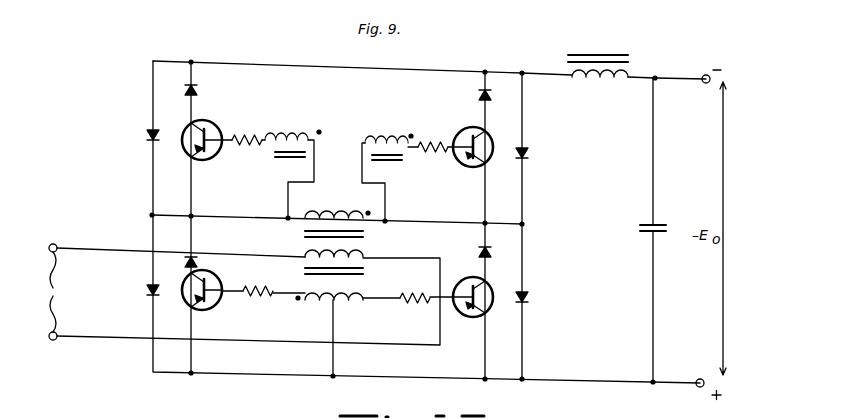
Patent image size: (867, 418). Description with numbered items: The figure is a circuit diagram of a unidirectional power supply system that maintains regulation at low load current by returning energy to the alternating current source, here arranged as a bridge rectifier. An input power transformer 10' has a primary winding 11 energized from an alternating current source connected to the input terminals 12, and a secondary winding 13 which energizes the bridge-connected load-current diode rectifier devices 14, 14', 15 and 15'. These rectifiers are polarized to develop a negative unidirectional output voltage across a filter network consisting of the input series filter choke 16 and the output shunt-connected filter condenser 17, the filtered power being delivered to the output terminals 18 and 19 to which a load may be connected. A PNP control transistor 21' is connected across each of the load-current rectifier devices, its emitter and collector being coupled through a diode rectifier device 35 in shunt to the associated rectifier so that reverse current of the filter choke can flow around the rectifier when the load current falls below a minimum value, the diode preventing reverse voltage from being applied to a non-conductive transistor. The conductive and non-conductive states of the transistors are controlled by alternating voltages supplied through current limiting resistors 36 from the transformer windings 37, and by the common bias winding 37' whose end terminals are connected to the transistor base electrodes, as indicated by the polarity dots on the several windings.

The input power transformer 10' is at (356, 252).
The primary winding 11 is at (313, 259).
The input terminals 12 is at (42, 292).
The secondary winding 13 is at (343, 208).
The diode rectifier device 14 is at (537, 300).
The diode rectifier device 14' is at (134, 133).
The diode rectifier device 15 is at (137, 291).
The diode rectifier device 15' is at (539, 155).
The filter choke 16 is at (598, 80).
The filter condenser 17 is at (645, 227).
The output terminal 18 is at (704, 75).
The output terminal 19 is at (699, 387).
The control transistor 21' is at (338, 226).
The diode rectifier device 35 is at (197, 90).
The current limiting resistor 36 is at (245, 131).
The winding 37 is at (336, 132).
The common bias winding 37' is at (331, 334).